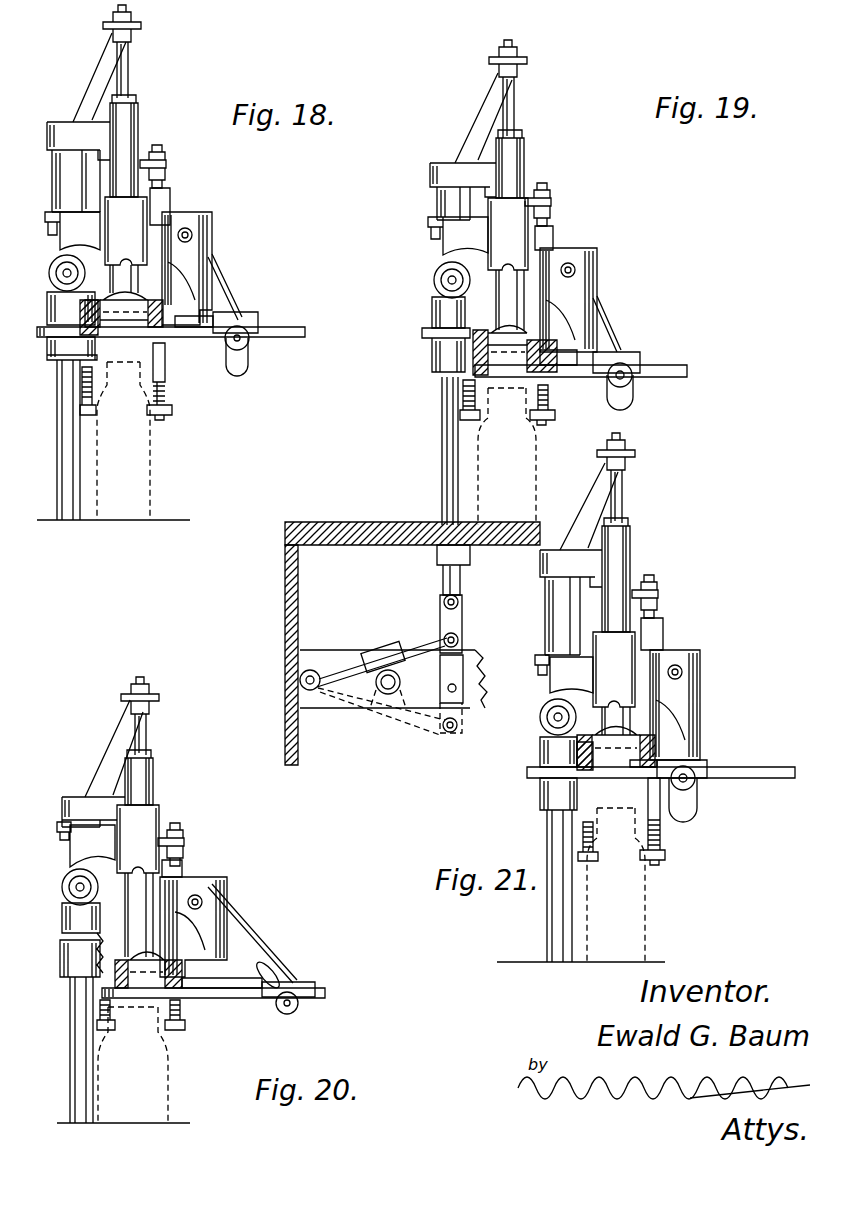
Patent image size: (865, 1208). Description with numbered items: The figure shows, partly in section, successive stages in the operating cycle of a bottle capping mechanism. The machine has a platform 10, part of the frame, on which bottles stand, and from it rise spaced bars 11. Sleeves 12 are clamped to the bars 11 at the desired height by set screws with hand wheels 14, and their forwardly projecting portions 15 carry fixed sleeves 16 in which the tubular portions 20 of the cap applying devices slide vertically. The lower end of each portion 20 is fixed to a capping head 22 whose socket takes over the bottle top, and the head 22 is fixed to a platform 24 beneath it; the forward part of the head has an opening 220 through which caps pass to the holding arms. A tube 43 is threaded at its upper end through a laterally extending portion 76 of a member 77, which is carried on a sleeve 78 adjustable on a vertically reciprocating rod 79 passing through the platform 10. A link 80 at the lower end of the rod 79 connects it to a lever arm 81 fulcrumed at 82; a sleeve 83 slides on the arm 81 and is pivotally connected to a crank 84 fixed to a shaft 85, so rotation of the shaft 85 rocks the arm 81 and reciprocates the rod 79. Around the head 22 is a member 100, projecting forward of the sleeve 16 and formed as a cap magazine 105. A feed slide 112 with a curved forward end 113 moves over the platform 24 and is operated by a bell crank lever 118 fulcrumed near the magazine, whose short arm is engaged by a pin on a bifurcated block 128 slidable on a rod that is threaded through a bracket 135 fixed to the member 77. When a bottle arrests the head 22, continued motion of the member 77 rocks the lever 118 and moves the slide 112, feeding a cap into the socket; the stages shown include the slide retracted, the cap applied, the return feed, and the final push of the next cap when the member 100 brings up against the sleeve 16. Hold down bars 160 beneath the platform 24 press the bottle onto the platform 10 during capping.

In FIG. 21, the platform 10 is at (385, 500).
In FIG. 18, the spaced bars 11 is at (62, 430).
In FIG. 19, the spaced bars 11 is at (440, 438).
In FIG. 21, the spaced bars 11 is at (560, 826).
In FIG. 20, the spaced bars 11 is at (80, 1040).
In FIG. 18, the sleeves 12 is at (55, 312).
In FIG. 19, the sleeves 12 is at (440, 318).
In FIG. 21, the sleeves 12 is at (545, 750).
In FIG. 20, the sleeves 12 is at (68, 927).
In FIG. 18, the hand wheels 14 is at (48, 262).
In FIG. 19, the hand wheels 14 is at (433, 282).
In FIG. 21, the hand wheels 14 is at (540, 726).
In FIG. 20, the hand wheels 14 is at (62, 888).
In FIG. 18, the forwardly projecting portions 15 is at (97, 240).
In FIG. 19, the forwardly projecting portions 15 is at (487, 250).
In FIG. 21, the forwardly projecting portions 15 is at (593, 695).
In FIG. 20, the forwardly projecting portions 15 is at (118, 848).
In FIG. 18, the sleeves 16 is at (123, 210).
In FIG. 19, the sleeves 16 is at (527, 240).
In FIG. 21, the sleeves 16 is at (620, 656).
In FIG. 20, the sleeves 16 is at (160, 818).
In FIG. 18, the portions of the cap applying devices 20 is at (142, 110).
In FIG. 19, the portions of the cap applying devices 20 is at (528, 162).
In FIG. 21, the portions of the cap applying devices 20 is at (632, 558).
In FIG. 20, the portions of the cap applying devices 20 is at (155, 773).
In FIG. 18, the capping head 22 is at (85, 330).
In FIG. 19, the capping head 22 is at (465, 350).
In FIG. 21, the capping head 22 is at (575, 778).
In FIG. 20, the capping head 22 is at (115, 985).
In FIG. 18, the platform 24 is at (185, 343).
In FIG. 19, the platform 24 is at (665, 373).
In FIG. 21, the platform 24 is at (777, 767).
In FIG. 20, the platform 24 is at (325, 996).
In FIG. 18, the tube 43 is at (132, 77).
In FIG. 19, the tube 43 is at (518, 113).
In FIG. 21, the tube 43 is at (626, 512).
In FIG. 20, the tube 43 is at (150, 740).
In FIG. 18, the laterally extending portion 76 is at (142, 25).
In FIG. 19, the laterally extending portion 76 is at (527, 60).
In FIG. 21, the laterally extending portion 76 is at (636, 455).
In FIG. 20, the laterally extending portion 76 is at (160, 697).
In FIG. 18, the member 77 is at (95, 80).
In FIG. 19, the member 77 is at (482, 112).
In FIG. 21, the member 77 is at (597, 502).
In FIG. 20, the member 77 is at (108, 750).
In FIG. 18, the sleeve 78 is at (58, 172).
In FIG. 19, the sleeve 78 is at (437, 206).
In FIG. 21, the sleeve 78 is at (552, 630).
In FIG. 20, the sleeve 78 is at (64, 815).
In FIG. 21, the vertically reciprocating rod 79 is at (465, 582).
In FIG. 21, the link 80 is at (455, 732).
In FIG. 21, the lever arm 81 is at (425, 648).
In FIG. 21, the fulcrum 82 is at (300, 684).
In FIG. 21, the sleeve 83 is at (372, 686).
In FIG. 21, the crank 84 is at (380, 672).
In FIG. 21, the shaft 85 is at (400, 698).
In FIG. 18, the member 100 is at (124, 297).
In FIG. 19, the member 100 is at (515, 340).
In FIG. 21, the member 100 is at (616, 736).
In FIG. 20, the member 100 is at (148, 961).
In FIG. 18, the cap magazine 105 is at (213, 225).
In FIG. 19, the cap magazine 105 is at (597, 265).
In FIG. 21, the cap magazine 105 is at (700, 677).
In FIG. 20, the cap magazine 105 is at (227, 888).
In FIG. 18, the feed slide 112 is at (255, 323).
In FIG. 19, the feed slide 112 is at (640, 357).
In FIG. 21, the feed slide 112 is at (707, 762).
In FIG. 20, the feed slide 112 is at (305, 985).
In FIG. 18, the curved forward end 113 is at (190, 330).
In FIG. 19, the curved forward end 113 is at (580, 365).
In FIG. 21, the curved forward end 113 is at (630, 778).
In FIG. 20, the curved forward end 113 is at (240, 990).
In FIG. 18, the bell crank lever 118 is at (222, 296).
In FIG. 19, the bell crank lever 118 is at (601, 327).
In FIG. 21, the bell crank lever 118 is at (698, 800).
In FIG. 20, the bell crank lever 118 is at (250, 950).
In FIG. 18, the bifurcated block 128 is at (168, 198).
In FIG. 19, the bifurcated block 128 is at (548, 226).
In FIG. 21, the bifurcated block 128 is at (663, 648).
In FIG. 20, the bifurcated block 128 is at (183, 870).
In FIG. 18, the bracket 135 is at (165, 160).
In FIG. 19, the bracket 135 is at (548, 203).
In FIG. 21, the bracket 135 is at (658, 602).
In FIG. 20, the bracket 135 is at (184, 845).
In FIG. 18, the hold down bars 160 is at (173, 412).
In FIG. 19, the hold down bars 160 is at (555, 417).
In FIG. 21, the hold down bars 160 is at (655, 853).
In FIG. 20, the hold down bars 160 is at (187, 1025).
In FIG. 18, the opening 220 is at (150, 318).